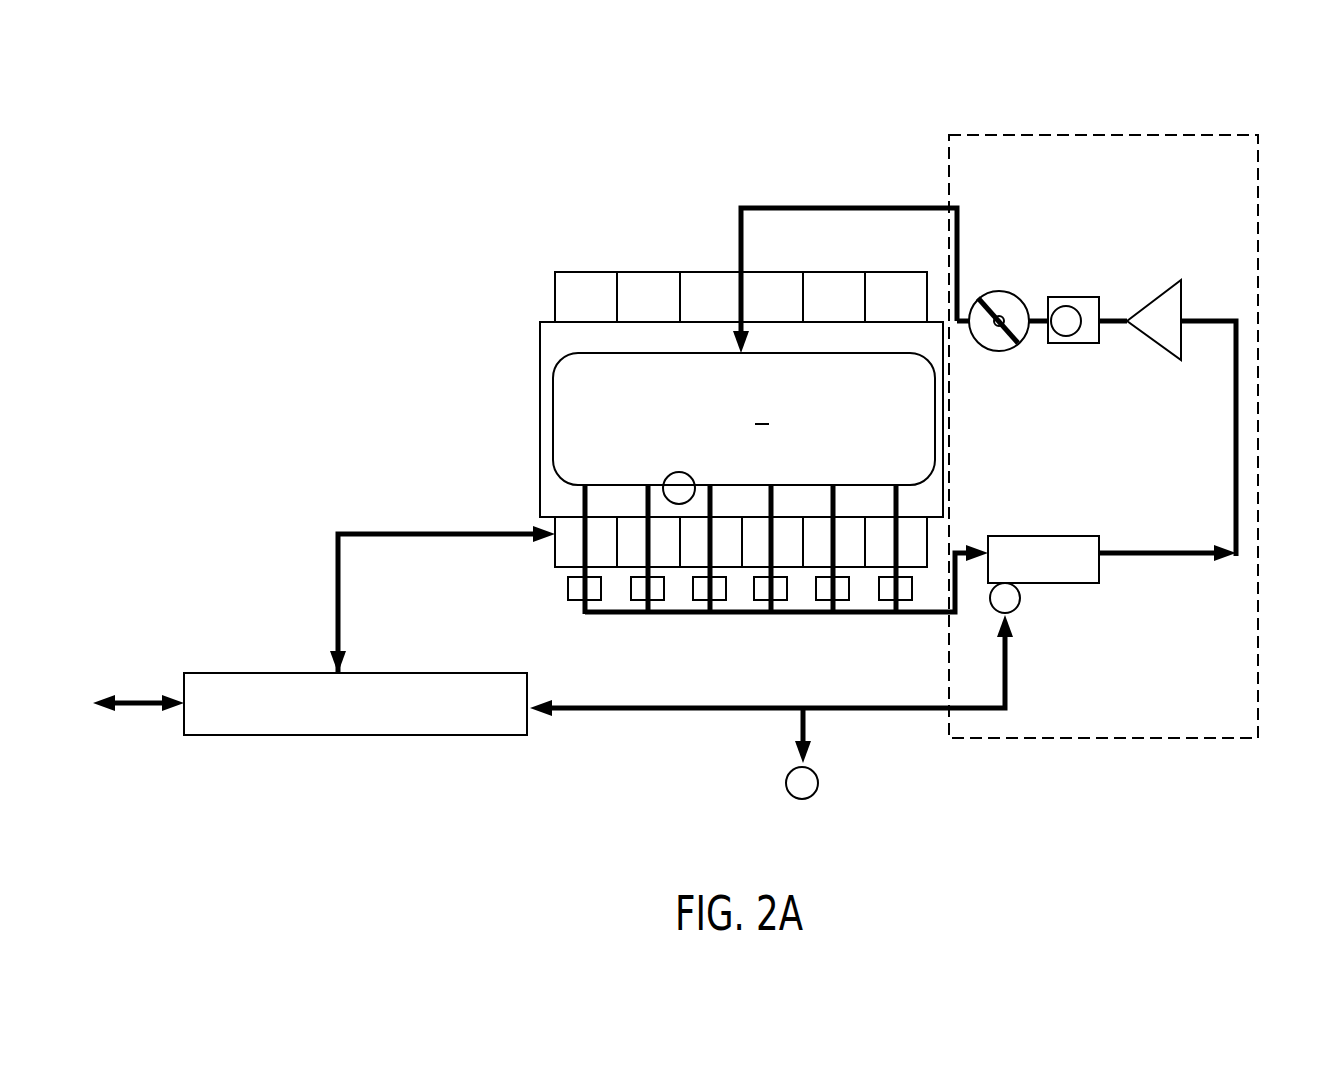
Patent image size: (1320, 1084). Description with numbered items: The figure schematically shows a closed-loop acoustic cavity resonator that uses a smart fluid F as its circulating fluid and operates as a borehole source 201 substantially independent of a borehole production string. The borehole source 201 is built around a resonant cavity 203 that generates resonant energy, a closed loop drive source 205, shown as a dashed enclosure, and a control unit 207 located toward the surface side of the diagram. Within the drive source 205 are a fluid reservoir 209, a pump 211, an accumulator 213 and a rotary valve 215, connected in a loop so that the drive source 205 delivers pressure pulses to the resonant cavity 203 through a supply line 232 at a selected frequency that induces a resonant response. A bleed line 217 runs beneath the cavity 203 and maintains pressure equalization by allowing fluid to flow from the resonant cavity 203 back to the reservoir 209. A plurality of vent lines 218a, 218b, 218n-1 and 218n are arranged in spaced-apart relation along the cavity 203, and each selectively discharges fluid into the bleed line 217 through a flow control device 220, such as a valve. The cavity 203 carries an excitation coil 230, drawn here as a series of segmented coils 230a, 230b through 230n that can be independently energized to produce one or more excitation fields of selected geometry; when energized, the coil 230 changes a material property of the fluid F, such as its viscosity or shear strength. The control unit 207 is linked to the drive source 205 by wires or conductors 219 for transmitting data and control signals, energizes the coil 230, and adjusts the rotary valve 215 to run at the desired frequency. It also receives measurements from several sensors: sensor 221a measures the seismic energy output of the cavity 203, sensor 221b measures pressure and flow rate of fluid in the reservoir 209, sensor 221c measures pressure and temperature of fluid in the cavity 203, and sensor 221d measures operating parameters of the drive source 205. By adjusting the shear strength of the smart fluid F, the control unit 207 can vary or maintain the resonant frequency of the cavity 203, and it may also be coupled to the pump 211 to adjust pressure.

The borehole source 201 is at (659, 439).
The resonant cavity 203 is at (684, 402).
The closed loop drive source 205 is at (1103, 401).
The control unit 207 is at (310, 706).
The fluid reservoir 209 is at (1112, 478).
The pump 211 is at (1174, 301).
The accumulator 213 is at (1089, 273).
The rotary valve 215 is at (1008, 287).
The bleed line 217 is at (786, 602).
The vent line 218a is at (581, 624).
The vent line 218b is at (688, 636).
The vent line 218n-1 is at (831, 638).
The vent line 218n is at (911, 623).
The wires or conductors 219 is at (771, 695).
The flow control device 220 is at (551, 604).
The sensor 221a is at (748, 765).
The sensor 221b is at (1047, 621).
The sensor 221c is at (636, 464).
The sensor 221d is at (1108, 353).
The excitation coil 230 is at (628, 595).
The segmented coil 230a is at (532, 268).
The segmented coil 230b is at (621, 264).
The segmented coil 230n is at (866, 272).
The fluid inlet line 232 is at (802, 266).